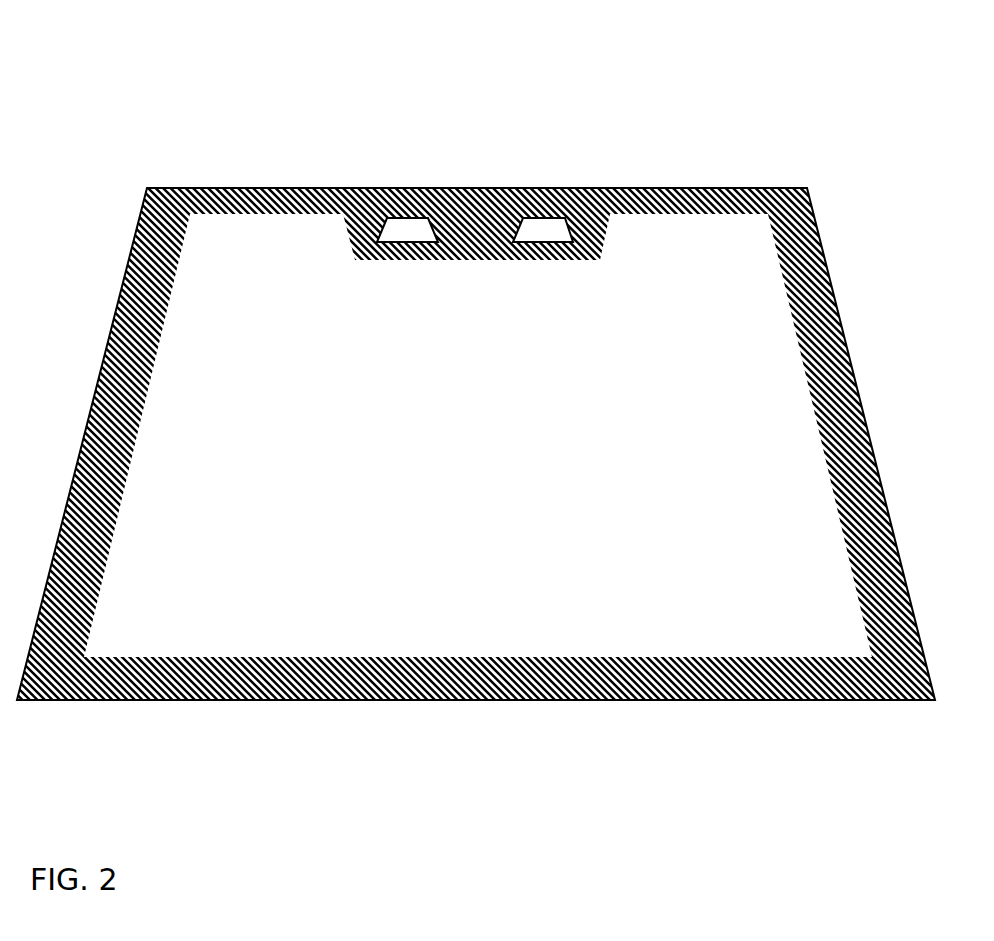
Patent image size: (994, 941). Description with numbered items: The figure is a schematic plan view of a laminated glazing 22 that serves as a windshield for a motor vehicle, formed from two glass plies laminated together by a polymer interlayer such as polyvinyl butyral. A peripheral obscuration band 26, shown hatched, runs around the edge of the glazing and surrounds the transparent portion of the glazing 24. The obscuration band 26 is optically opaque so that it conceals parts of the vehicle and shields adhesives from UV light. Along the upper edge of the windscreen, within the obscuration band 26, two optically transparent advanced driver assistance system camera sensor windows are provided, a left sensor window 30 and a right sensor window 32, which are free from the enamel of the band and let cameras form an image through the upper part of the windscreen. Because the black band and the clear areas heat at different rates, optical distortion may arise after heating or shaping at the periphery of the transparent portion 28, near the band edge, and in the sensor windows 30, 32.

The laminated glazing 22 is at (733, 172).
The transparent portion of the glazing 24 is at (355, 535).
The peripheral obscuration band 26 is at (812, 680).
The transparent portion 28 is at (487, 640).
The left sensor window 30 is at (405, 227).
The right sensor window 32 is at (547, 223).